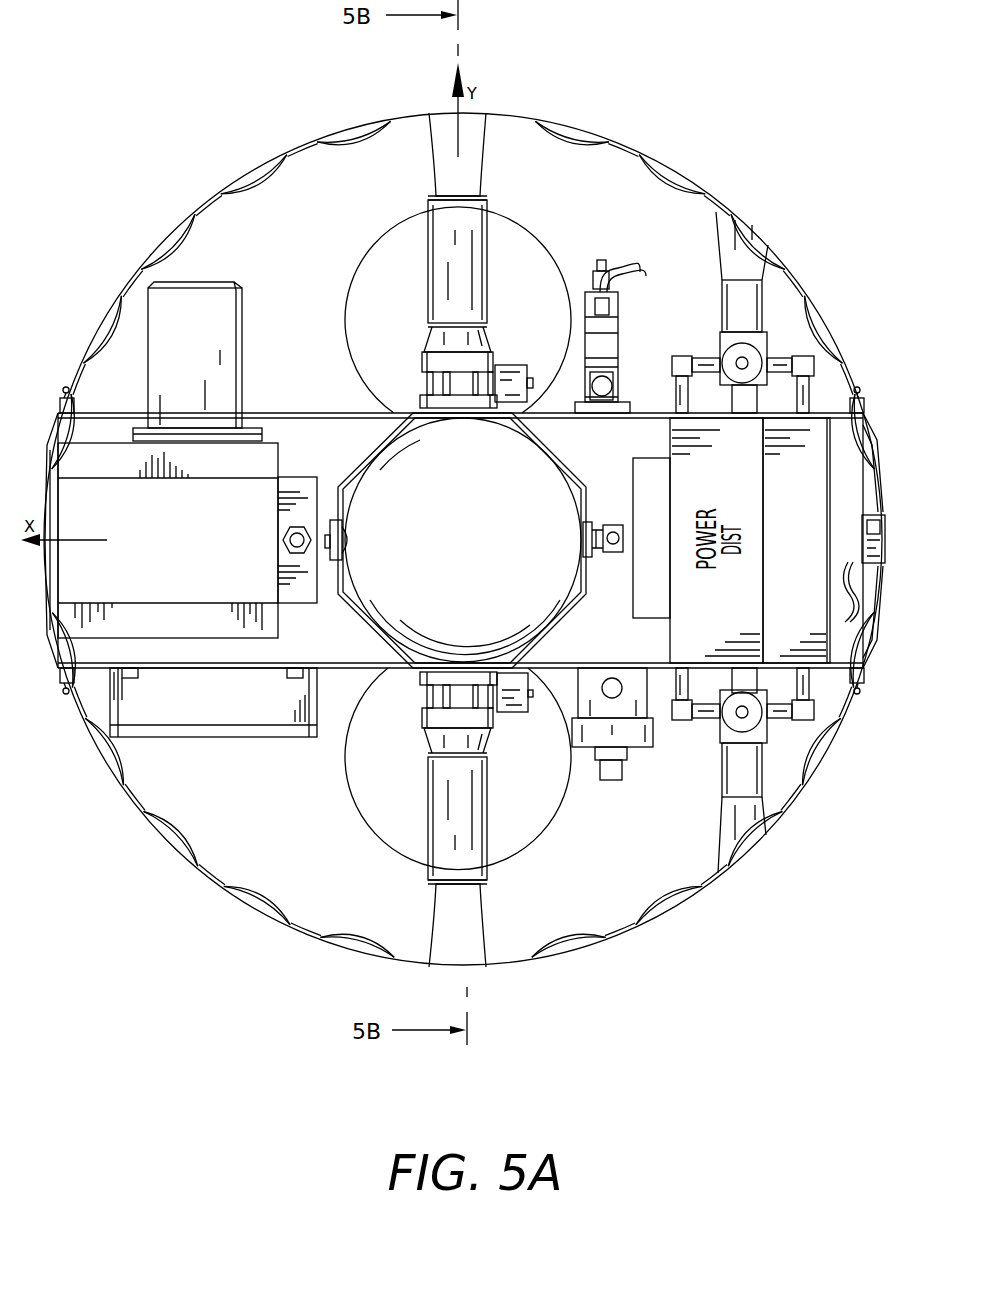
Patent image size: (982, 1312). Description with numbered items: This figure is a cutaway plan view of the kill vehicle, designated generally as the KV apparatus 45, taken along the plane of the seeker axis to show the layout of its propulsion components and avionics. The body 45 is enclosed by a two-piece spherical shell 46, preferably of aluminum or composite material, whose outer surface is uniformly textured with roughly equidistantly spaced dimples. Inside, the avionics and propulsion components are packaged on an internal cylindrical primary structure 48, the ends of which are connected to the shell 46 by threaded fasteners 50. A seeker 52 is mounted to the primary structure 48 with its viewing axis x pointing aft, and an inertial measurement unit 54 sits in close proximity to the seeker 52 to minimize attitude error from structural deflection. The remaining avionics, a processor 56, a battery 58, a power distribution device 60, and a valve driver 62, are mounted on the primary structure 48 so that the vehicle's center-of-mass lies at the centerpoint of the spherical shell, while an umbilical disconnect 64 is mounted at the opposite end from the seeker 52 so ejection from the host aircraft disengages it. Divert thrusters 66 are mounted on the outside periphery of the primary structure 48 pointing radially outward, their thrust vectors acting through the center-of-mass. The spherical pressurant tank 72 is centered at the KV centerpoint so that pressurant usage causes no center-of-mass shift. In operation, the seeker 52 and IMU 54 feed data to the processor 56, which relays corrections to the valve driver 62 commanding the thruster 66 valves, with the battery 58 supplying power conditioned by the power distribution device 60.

The KV apparatus 45 is at (650, 944).
The spherical shell 46 is at (298, 937).
The primary structure 48 is at (302, 412).
The threaded fasteners 50 is at (62, 387).
The seeker 52 is at (283, 463).
The inertial measurement unit 54 is at (244, 327).
The processor 56 is at (231, 738).
The battery 58 is at (866, 452).
The power distribution device 60 is at (670, 636).
The valve driver 62 is at (633, 467).
The umbilical disconnect 64 is at (866, 543).
The divert thrusters 66 is at (487, 181).
The pressurant tank 72 is at (373, 606).